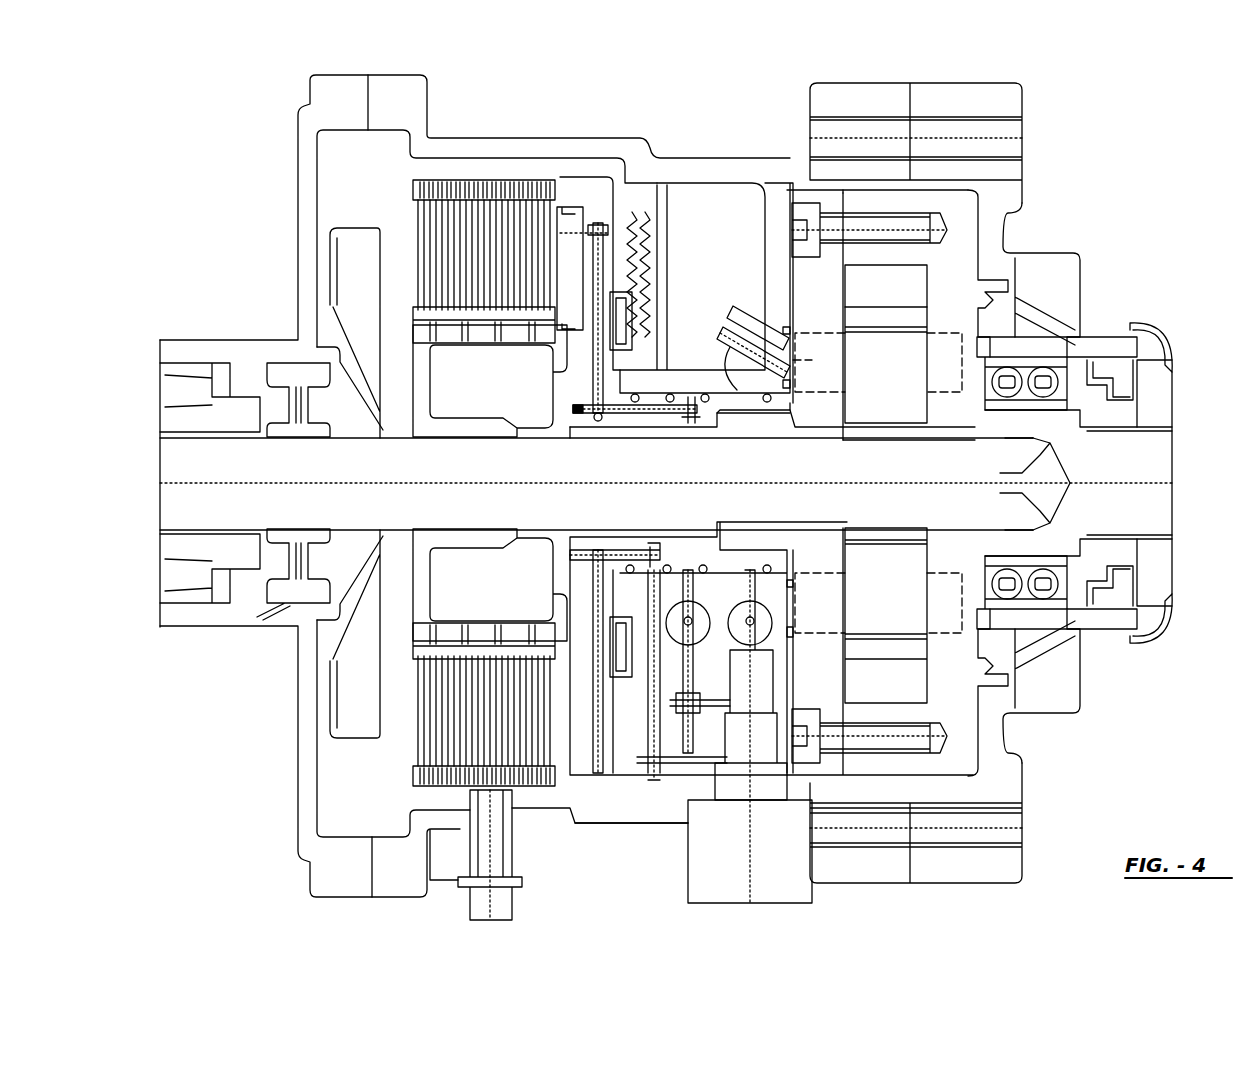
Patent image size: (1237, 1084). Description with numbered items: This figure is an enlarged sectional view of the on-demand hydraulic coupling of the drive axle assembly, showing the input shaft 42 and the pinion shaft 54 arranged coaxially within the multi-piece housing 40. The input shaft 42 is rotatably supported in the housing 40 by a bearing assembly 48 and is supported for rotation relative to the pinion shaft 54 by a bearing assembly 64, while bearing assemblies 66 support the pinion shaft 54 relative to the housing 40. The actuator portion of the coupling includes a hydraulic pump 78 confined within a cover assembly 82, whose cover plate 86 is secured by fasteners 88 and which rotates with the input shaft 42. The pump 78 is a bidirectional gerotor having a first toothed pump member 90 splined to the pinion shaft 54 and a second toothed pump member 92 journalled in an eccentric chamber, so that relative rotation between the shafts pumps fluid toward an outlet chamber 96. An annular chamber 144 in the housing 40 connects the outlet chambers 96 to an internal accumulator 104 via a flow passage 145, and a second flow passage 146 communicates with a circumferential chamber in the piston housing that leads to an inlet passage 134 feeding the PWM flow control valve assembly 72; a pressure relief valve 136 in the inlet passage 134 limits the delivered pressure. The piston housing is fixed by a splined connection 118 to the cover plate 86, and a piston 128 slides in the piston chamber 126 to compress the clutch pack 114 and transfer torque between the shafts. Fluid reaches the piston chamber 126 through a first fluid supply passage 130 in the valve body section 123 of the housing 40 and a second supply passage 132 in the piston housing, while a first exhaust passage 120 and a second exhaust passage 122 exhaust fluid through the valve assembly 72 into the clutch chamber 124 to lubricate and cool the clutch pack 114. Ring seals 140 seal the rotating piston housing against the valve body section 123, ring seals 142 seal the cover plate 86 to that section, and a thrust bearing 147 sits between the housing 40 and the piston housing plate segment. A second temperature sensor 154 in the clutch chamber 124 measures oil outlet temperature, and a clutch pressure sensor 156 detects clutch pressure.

The multi-piece housing 40 is at (308, 770).
The input shaft 42 is at (1148, 460).
The bearing assembly 48 is at (1047, 380).
The pinion shaft 54 is at (375, 472).
The bearing assembly 64 is at (1002, 440).
The bearing assemblies 66 is at (178, 375).
The PWM flow control valve assembly 72 is at (707, 868).
The hydraulic pump 78 is at (892, 397).
The cover assembly 82 is at (956, 239).
The cover plate 86 is at (818, 420).
The fasteners 88 is at (807, 213).
The first toothed pump member 90 is at (900, 390).
The second toothed pump member 92 is at (900, 298).
The outlet chamber 96 is at (827, 577).
The internal accumulator 104 is at (716, 236).
The clutch pack 114 is at (462, 251).
The splined connection 118 is at (765, 410).
The first exhaust passage 120 is at (610, 553).
The second exhaust passage 122 is at (658, 738).
The valve body section 123 is at (660, 800).
The clutch chamber 124 is at (527, 598).
The piston chamber 126 is at (583, 258).
The piston 128 is at (565, 275).
The first fluid supply passage 130 is at (688, 573).
The second supply passage 132 is at (617, 412).
The inlet passage 134 is at (752, 628).
The pressure relief valve 136 is at (737, 627).
The ring seals 140 is at (707, 393).
The ring seals 142 is at (790, 633).
The annular chamber 144 is at (778, 362).
The flow passage 145 is at (762, 337).
The second flow passage 146 is at (742, 383).
The thrust bearing 147 is at (622, 657).
The second temperature sensor 154 is at (498, 904).
The clutch pressure sensor 156 is at (695, 622).